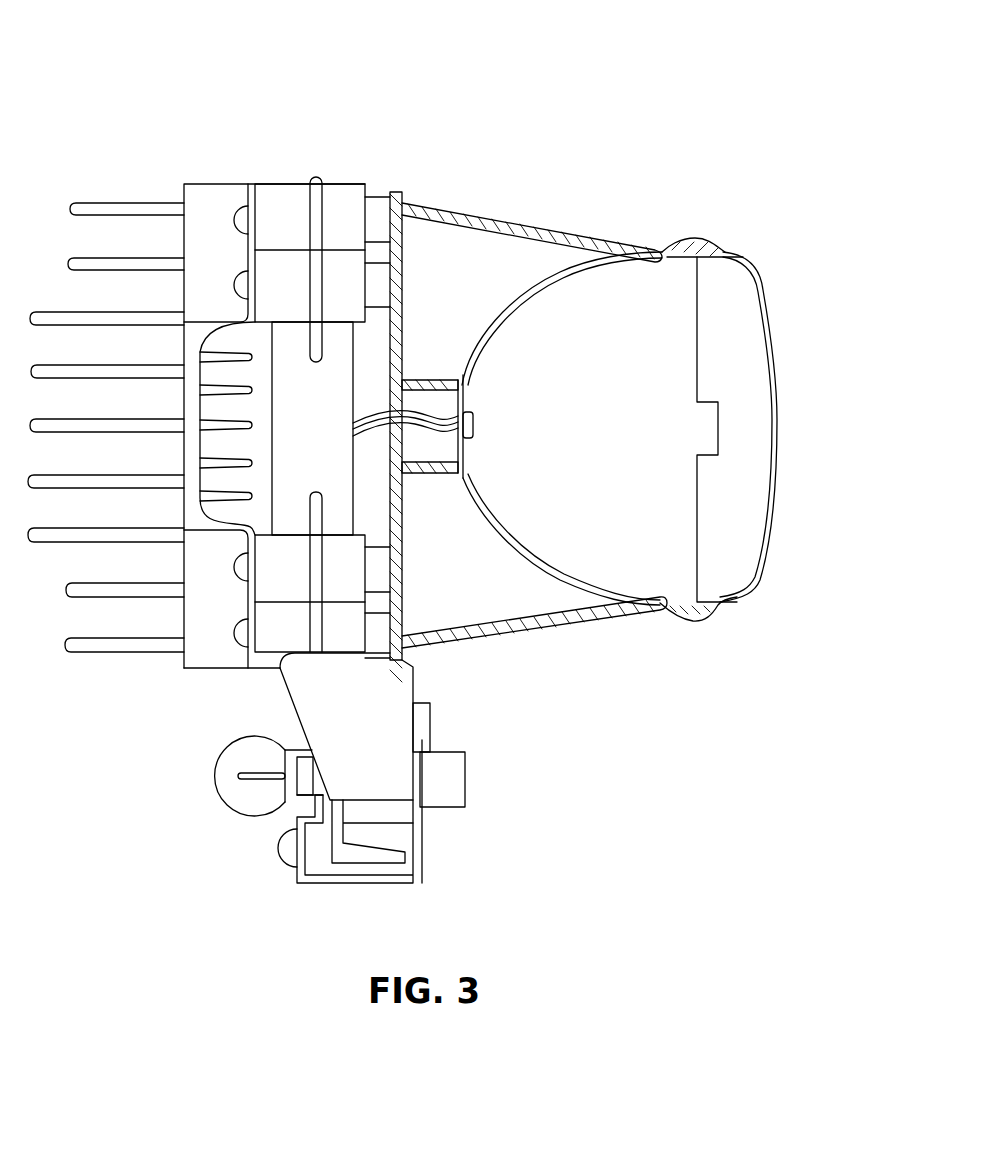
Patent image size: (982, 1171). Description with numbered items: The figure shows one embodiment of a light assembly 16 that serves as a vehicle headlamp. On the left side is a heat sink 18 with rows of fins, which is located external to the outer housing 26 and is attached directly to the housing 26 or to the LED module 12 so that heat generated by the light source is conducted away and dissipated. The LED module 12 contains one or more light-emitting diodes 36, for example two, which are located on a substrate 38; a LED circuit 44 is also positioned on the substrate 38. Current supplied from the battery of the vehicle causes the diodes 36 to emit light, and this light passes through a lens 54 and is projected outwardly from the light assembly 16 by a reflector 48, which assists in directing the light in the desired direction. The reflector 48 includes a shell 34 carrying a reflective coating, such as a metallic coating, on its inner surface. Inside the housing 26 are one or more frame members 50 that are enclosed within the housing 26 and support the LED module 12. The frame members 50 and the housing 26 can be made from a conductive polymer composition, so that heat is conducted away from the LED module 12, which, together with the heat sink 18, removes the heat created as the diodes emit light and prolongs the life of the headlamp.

The LED module 12 is at (538, 412).
The light assembly 16 is at (539, 353).
The heat sink 18 is at (108, 165).
The outer housing 26 is at (603, 238).
The shell 34 is at (513, 533).
The light-emitting diodes 36 is at (473, 433).
The substrate 38 is at (462, 380).
The LED circuit 44 is at (467, 452).
The reflector 48 is at (563, 295).
The frame members 50 is at (427, 475).
The lens 54 is at (773, 317).